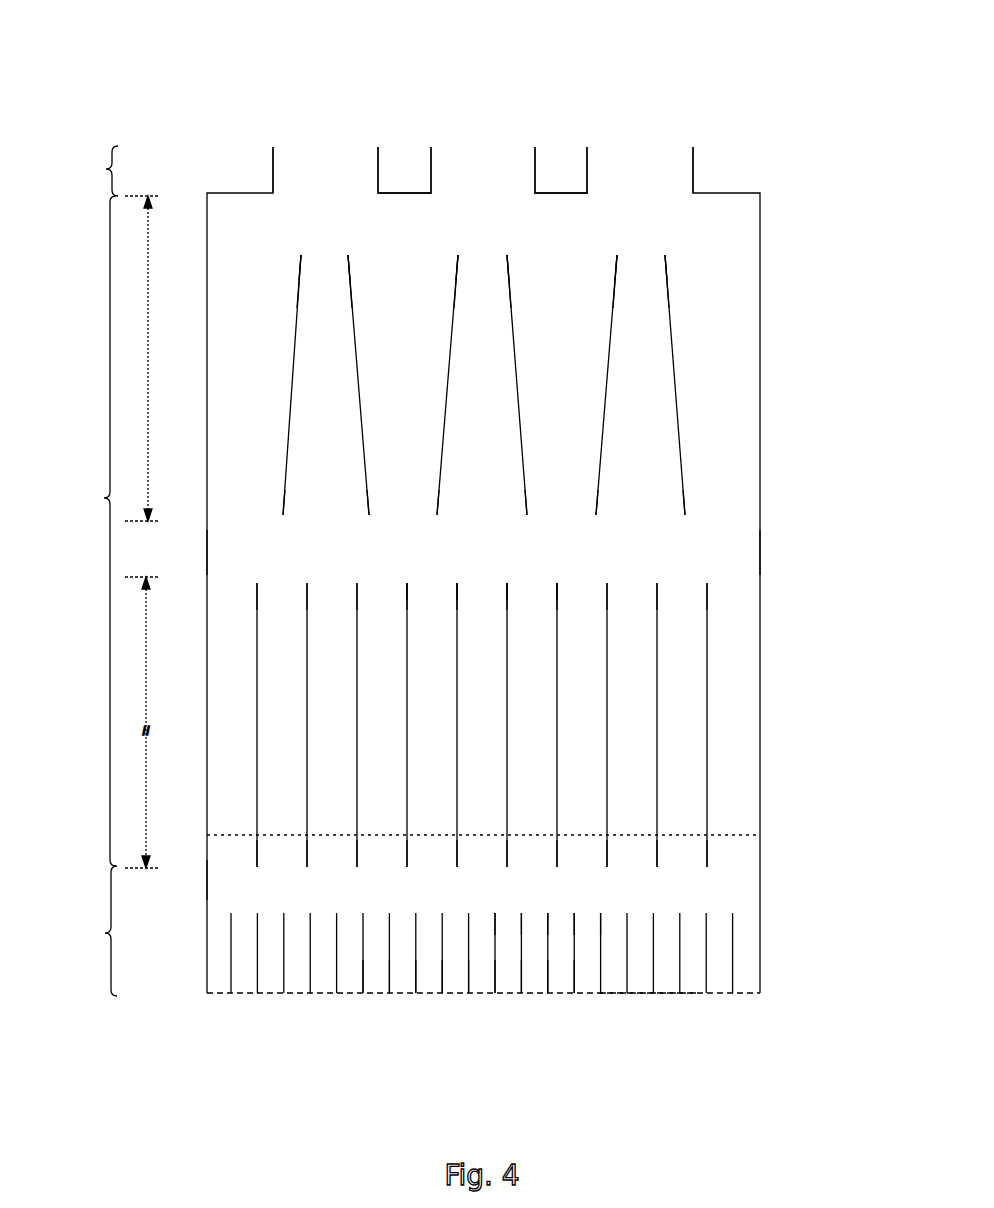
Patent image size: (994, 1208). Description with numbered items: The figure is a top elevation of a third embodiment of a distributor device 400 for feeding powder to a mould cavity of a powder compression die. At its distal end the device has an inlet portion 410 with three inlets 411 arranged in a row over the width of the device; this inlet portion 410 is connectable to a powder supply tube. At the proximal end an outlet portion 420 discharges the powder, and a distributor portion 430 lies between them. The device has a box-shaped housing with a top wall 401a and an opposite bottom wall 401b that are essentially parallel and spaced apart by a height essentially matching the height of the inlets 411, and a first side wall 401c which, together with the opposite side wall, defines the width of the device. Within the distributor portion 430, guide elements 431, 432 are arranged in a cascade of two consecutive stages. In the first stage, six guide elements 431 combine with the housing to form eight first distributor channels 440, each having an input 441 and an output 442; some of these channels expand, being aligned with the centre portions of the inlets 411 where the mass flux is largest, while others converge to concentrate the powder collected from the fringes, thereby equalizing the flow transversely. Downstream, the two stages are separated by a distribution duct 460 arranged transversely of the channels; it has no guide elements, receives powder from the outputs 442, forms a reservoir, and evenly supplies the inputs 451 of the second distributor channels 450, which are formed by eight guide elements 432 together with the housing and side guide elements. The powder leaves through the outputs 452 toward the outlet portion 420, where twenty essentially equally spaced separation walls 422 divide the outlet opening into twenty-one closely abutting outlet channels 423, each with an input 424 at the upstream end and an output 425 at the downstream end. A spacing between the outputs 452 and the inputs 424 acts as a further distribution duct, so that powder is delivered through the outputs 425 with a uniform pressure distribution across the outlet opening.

The distributor device 400 is at (740, 85).
The inlet portion 410 is at (92, 171).
The inlets 411 is at (320, 150).
The outlet portion 420 is at (92, 931).
The separation walls 422 is at (363, 996).
The outlet channels 423 is at (482, 953).
The input of outlet channel 424 is at (587, 913).
The output of outlet channel 425 is at (480, 996).
The distributor portion 430 is at (113, 531).
The first stage guide elements 431 is at (296, 308).
The second stage guide elements 432 is at (557, 580).
The first distributor channels 440 is at (233, 392).
The input of first distributor channel 441 is at (233, 272).
The output of first distributor channel 442 is at (233, 514).
The second distributor channels 450 is at (218, 710).
The input of second distributor channel 451 is at (218, 605).
The output of second distributor channel 452 is at (218, 860).
The distribution duct 460 is at (272, 553).
The top wall 401a is at (637, 995).
The bottom wall 401b is at (638, 832).
The first side wall 401c is at (205, 877).